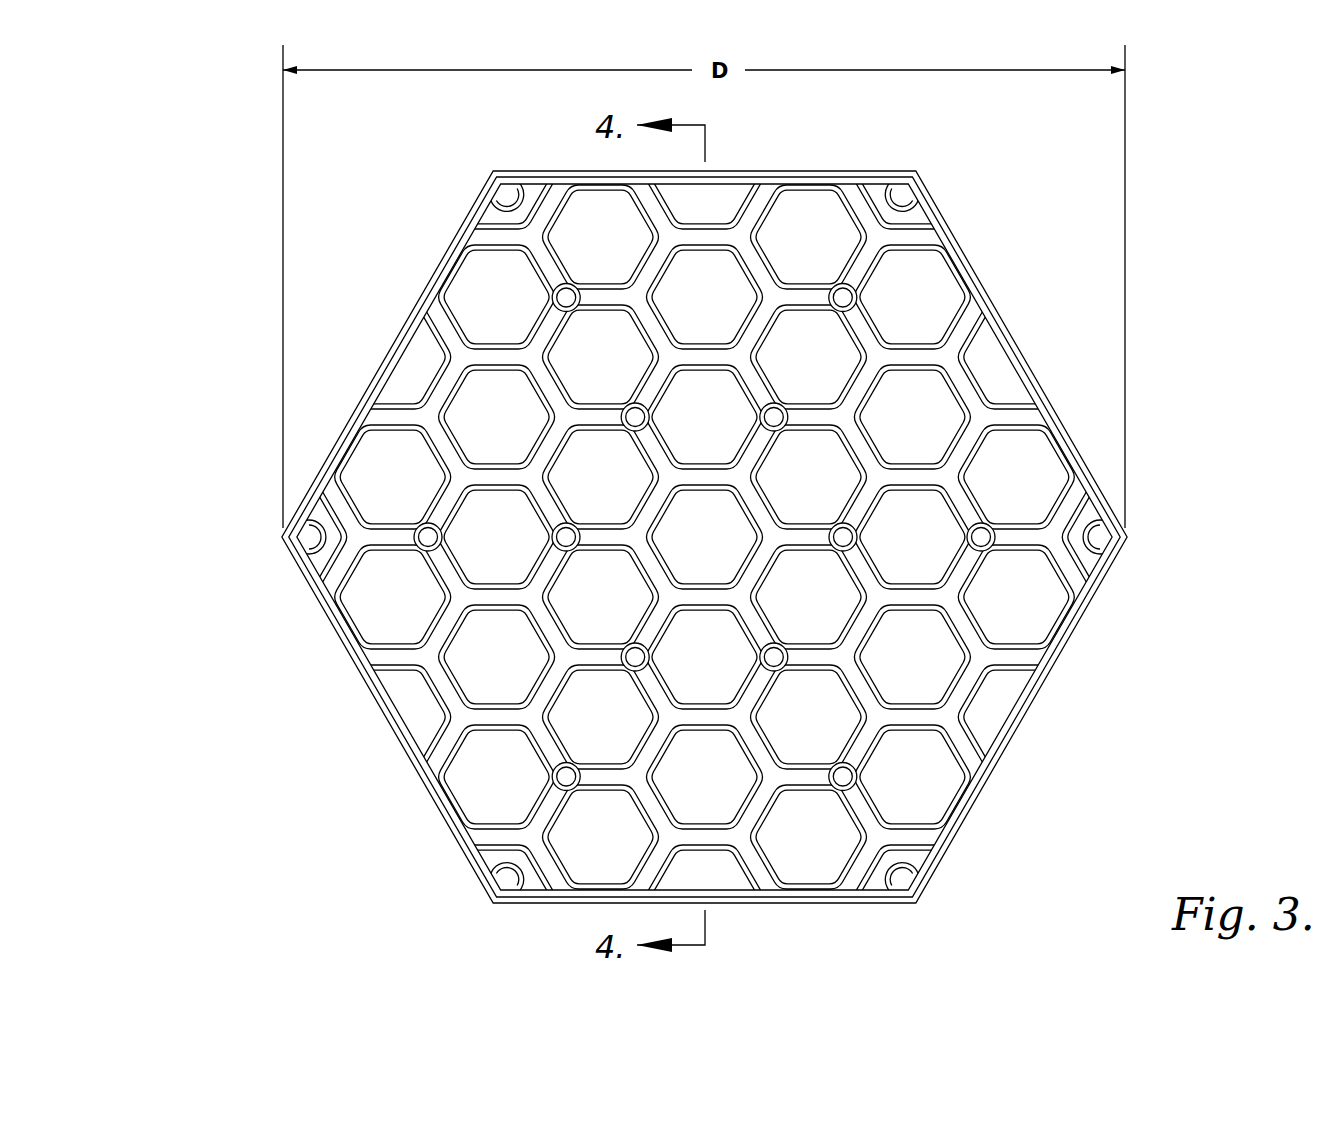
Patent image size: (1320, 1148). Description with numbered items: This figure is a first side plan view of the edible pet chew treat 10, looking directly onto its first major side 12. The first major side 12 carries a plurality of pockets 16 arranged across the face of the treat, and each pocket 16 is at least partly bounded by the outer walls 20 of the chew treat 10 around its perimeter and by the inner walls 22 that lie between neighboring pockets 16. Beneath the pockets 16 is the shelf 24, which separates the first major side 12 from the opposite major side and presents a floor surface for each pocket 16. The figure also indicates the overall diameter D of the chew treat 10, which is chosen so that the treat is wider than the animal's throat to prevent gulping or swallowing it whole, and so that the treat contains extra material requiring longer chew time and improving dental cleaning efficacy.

The chew treat 10 is at (980, 198).
The first major side 12 is at (378, 311).
The pockets 16 is at (718, 309).
The outer walls 20 is at (471, 212).
The inner walls 22 is at (758, 537).
The shelf 24 is at (925, 780).